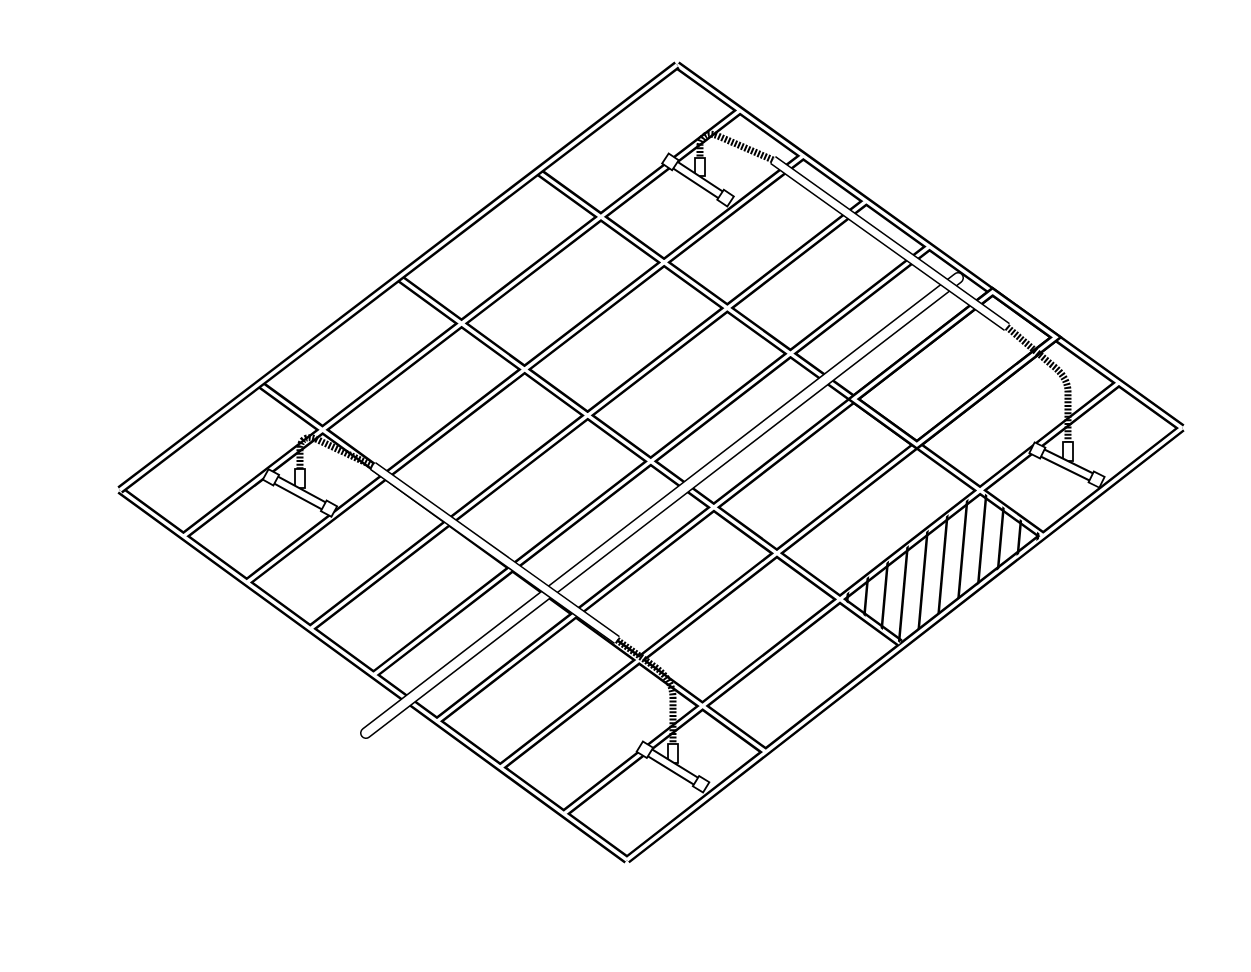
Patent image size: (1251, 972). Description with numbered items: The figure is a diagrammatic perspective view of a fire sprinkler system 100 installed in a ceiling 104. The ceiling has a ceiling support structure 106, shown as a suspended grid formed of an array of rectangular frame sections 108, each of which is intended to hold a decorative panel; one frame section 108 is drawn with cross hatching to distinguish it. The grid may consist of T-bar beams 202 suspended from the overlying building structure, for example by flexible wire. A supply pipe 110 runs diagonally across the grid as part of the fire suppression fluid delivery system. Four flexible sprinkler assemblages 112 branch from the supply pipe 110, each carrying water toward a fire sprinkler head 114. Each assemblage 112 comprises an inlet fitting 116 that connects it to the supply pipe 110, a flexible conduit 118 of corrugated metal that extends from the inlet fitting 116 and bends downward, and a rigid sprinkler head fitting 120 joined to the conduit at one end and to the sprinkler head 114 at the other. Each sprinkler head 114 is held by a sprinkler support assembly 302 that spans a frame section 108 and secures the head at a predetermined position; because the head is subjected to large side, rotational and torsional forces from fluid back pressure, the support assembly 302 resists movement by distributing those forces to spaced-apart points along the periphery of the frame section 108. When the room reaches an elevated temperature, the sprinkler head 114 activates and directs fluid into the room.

The fire sprinkler system 100 is at (669, 445).
The ceiling 104 is at (651, 462).
The ceiling support structure 106 is at (432, 233).
The rectangular frame section 108 is at (936, 572).
The supply pipe 110 is at (360, 733).
The flexible sprinkler assemblage 112 is at (674, 435).
The fire sprinkler head 114 is at (674, 512).
The inlet fitting 116 is at (787, 143).
The flexible conduit 118 is at (720, 118).
The sprinkler head fitting 120 is at (1065, 440).
The T-bar beam 202 is at (941, 424).
The sprinkler support assembly 302 is at (1097, 462).